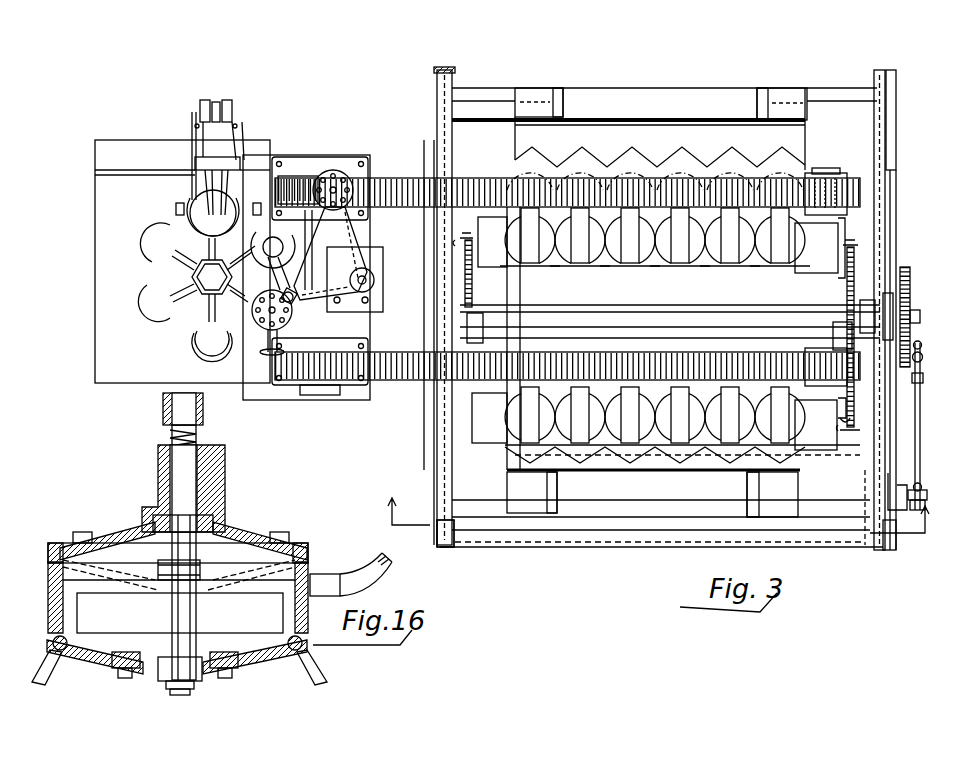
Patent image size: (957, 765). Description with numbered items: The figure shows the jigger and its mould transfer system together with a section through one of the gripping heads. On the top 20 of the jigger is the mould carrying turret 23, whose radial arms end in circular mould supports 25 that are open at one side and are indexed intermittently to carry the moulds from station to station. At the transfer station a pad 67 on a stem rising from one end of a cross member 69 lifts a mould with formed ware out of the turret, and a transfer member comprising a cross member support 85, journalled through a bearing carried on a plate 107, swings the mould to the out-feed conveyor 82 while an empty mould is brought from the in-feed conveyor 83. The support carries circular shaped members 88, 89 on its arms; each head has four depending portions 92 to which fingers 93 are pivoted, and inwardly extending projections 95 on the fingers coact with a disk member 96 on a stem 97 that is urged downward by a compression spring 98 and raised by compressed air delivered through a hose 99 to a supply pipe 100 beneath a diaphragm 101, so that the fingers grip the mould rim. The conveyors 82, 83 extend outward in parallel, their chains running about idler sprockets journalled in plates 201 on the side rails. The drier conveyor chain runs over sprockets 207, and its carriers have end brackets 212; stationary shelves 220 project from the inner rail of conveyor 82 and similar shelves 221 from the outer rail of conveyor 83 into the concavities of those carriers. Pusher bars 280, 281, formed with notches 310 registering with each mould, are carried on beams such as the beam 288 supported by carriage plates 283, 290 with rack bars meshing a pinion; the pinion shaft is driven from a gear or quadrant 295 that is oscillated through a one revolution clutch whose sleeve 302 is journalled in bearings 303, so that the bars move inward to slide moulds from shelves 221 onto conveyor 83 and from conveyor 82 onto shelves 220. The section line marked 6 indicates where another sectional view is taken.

In FIG. 3, the top 20 is at (182, 261).
In FIG. 3, the mould carrying turret 23 is at (214, 277).
In FIG. 3, the circular mould supports 25 is at (208, 345).
In FIG. 3, the pad 67 is at (274, 237).
In FIG. 3, the cross member 69 is at (280, 293).
In FIG. 3, the out-feed conveyor 82 is at (382, 180).
In FIG. 3, the in-feed conveyor 83 is at (410, 356).
In FIG. 3, the cross member support 85 is at (366, 275).
In FIG. 3, the circular shaped member 88 is at (340, 172).
In FIG. 16, the circular shaped member 88 is at (232, 530).
In FIG. 3, the circular shaped member 89 is at (268, 334).
In FIG. 16, the depending portions 92 is at (77, 612).
In FIG. 16, the fingers 93 is at (52, 660).
In FIG. 16, the inwardly extending projections 95 is at (88, 640).
In FIG. 16, the disk member 96 is at (268, 643).
In FIG. 16, the stem 97 is at (172, 636).
In FIG. 16, the compression spring 98 is at (226, 480).
In FIG. 16, the hose 99 is at (358, 560).
In FIG. 16, the supply pipe 100 is at (318, 574).
In FIG. 16, the diaphragm 101 is at (238, 562).
In FIG. 3, the plate 107 is at (370, 288).
In FIG. 3, the plates 201 is at (857, 318).
In FIG. 3, the sprockets 207 is at (468, 292).
In FIG. 3, the brackets 212 is at (854, 431).
In FIG. 3, the stationary shelves 220 is at (583, 265).
In FIG. 3, the shelves 221 is at (507, 448).
In FIG. 3, the pusher bar 280 is at (437, 104).
In FIG. 3, the pusher bar 281 is at (660, 129).
In FIG. 3, the plate 283 is at (435, 512).
In FIG. 3, the beam 288 is at (807, 88).
In FIG. 3, the plates 290 is at (893, 88).
In FIG. 3, the gear or quadrant 295 is at (910, 276).
In FIG. 3, the sleeve 302 is at (893, 473).
In FIG. 3, the bearings 303 is at (921, 456).
In FIG. 3, the notches 310 is at (535, 160).
In FIG. 3, the section line 6 is at (659, 509).